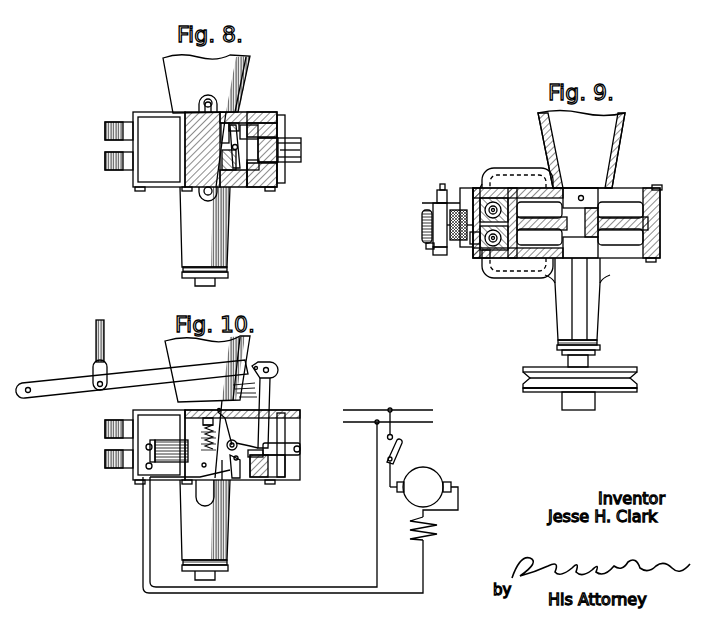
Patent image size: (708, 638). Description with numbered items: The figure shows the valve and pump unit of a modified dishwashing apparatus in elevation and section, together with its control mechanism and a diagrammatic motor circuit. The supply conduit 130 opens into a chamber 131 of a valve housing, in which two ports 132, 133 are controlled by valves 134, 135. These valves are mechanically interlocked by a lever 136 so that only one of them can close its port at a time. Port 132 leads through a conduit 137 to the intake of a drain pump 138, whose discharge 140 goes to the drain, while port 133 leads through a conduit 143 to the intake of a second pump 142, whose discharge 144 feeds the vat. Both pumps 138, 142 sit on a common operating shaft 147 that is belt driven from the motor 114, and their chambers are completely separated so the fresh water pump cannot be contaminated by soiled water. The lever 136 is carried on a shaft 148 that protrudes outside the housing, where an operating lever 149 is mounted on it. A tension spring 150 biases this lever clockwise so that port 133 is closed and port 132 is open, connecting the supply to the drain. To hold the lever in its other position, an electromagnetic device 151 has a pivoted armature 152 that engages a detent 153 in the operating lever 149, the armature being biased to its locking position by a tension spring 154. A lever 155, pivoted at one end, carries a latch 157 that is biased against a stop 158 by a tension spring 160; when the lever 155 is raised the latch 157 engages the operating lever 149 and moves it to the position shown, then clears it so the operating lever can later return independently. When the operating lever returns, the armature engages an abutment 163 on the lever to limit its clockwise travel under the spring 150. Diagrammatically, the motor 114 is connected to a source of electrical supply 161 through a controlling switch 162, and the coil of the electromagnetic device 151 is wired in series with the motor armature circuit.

In FIG. 10, the motor 114 is at (436, 474).
In FIG. 8, the supply conduit 130 is at (290, 139).
In FIG. 10, the supply conduit 130 is at (290, 455).
In FIG. 8, the chamber 131 is at (258, 124).
In FIG. 9, the chamber 131 is at (470, 188).
In FIG. 8, the port 132 is at (224, 122).
In FIG. 8, the port 133 is at (231, 172).
In FIG. 8, the valve 134 is at (236, 121).
In FIG. 9, the valve 134 is at (486, 176).
In FIG. 8, the valve 135 is at (252, 172).
In FIG. 9, the valve 135 is at (486, 258).
In FIG. 8, the lever 136 is at (240, 140).
In FIG. 9, the lever 136 is at (476, 246).
In FIG. 8, the conduit 137 is at (204, 97).
In FIG. 9, the conduit 137 is at (505, 167).
In FIG. 9, the pump 138 is at (622, 205).
In FIG. 8, the discharge 140 is at (118, 122).
In FIG. 10, the discharge 140 is at (118, 420).
In FIG. 9, the pump 142 is at (625, 240).
In FIG. 8, the conduit 143 is at (206, 199).
In FIG. 9, the conduit 143 is at (512, 279).
In FIG. 8, the discharge 144 is at (116, 172).
In FIG. 10, the discharge 144 is at (116, 470).
In FIG. 8, the operating shaft 147 is at (195, 283).
In FIG. 9, the operating shaft 147 is at (585, 282).
In FIG. 10, the operating shaft 147 is at (215, 578).
In FIG. 8, the shaft 148 is at (296, 151).
In FIG. 9, the shaft 148 is at (508, 238).
In FIG. 10, the shaft 148 is at (236, 442).
In FIG. 9, the operating lever 149 is at (436, 252).
In FIG. 10, the operating lever 149 is at (255, 450).
In FIG. 9, the tension spring 150 is at (422, 218).
In FIG. 10, the tension spring 150 is at (220, 410).
In FIG. 10, the electromagnetic device 151 is at (168, 440).
In FIG. 9, the armature 152 is at (434, 256).
In FIG. 10, the armature 152 is at (172, 480).
In FIG. 10, the detent 153 is at (226, 470).
In FIG. 9, the tension spring 154 is at (450, 195).
In FIG. 10, the tension spring 154 is at (202, 438).
In FIG. 10, the lever 155 is at (140, 372).
In FIG. 10, the latch 157 is at (280, 446).
In FIG. 10, the stop 158 is at (262, 364).
In FIG. 10, the tension spring 160 is at (262, 400).
In FIG. 10, the source of electrical supply 161 is at (410, 422).
In FIG. 10, the controlling switch 162 is at (403, 444).
In FIG. 10, the abutment 163 is at (241, 472).